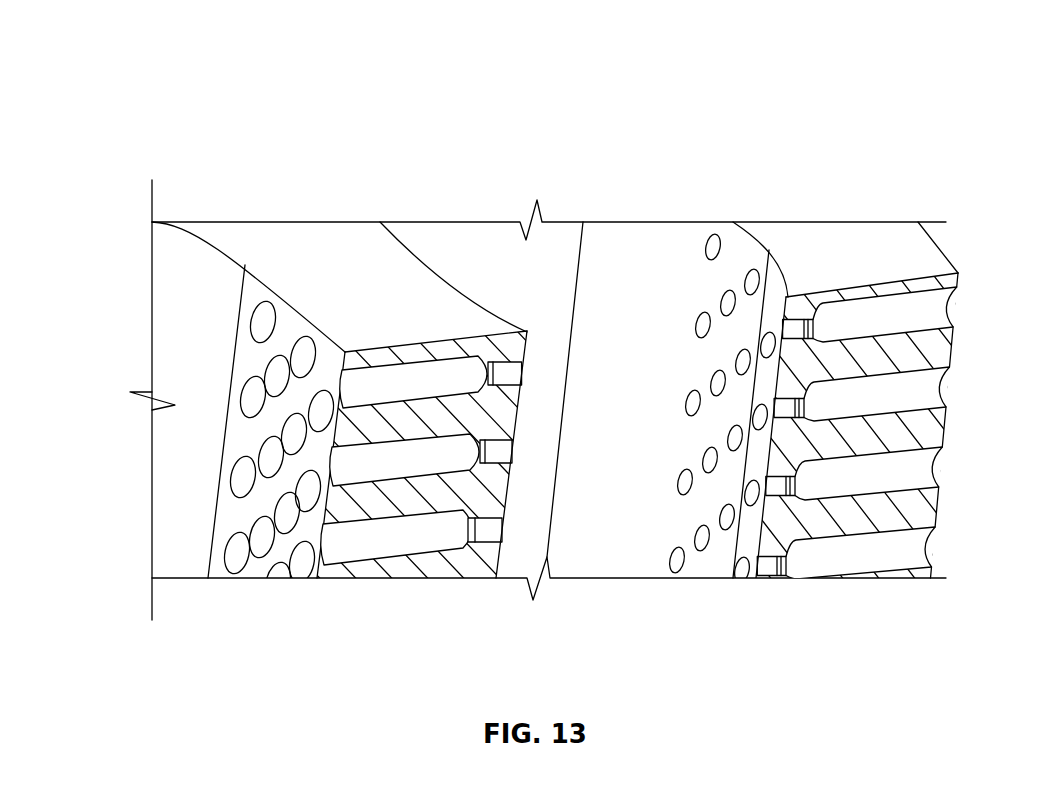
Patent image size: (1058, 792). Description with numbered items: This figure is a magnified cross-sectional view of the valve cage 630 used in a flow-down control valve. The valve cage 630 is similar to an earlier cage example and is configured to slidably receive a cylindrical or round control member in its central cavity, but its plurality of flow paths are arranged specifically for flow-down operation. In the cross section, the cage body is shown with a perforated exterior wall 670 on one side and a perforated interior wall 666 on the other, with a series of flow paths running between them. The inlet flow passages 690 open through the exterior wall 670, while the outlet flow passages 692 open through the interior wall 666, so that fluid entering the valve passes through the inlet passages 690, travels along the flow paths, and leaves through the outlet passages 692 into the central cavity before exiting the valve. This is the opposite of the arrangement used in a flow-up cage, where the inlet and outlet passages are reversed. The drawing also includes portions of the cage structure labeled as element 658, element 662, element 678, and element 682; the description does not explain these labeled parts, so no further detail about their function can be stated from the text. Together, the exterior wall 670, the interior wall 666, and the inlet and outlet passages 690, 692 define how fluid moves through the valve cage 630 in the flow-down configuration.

The valve cage 630 is at (136, 100).
The first plate 658 is at (265, 567).
The tube block 662 is at (516, 285).
The interior wall 666 is at (648, 263).
The exterior wall 670 is at (258, 287).
The second plate 678 is at (832, 240).
The top surface 682 is at (307, 240).
The inlet flow passages 690 is at (274, 377).
The outlet flow passages 692 is at (705, 238).